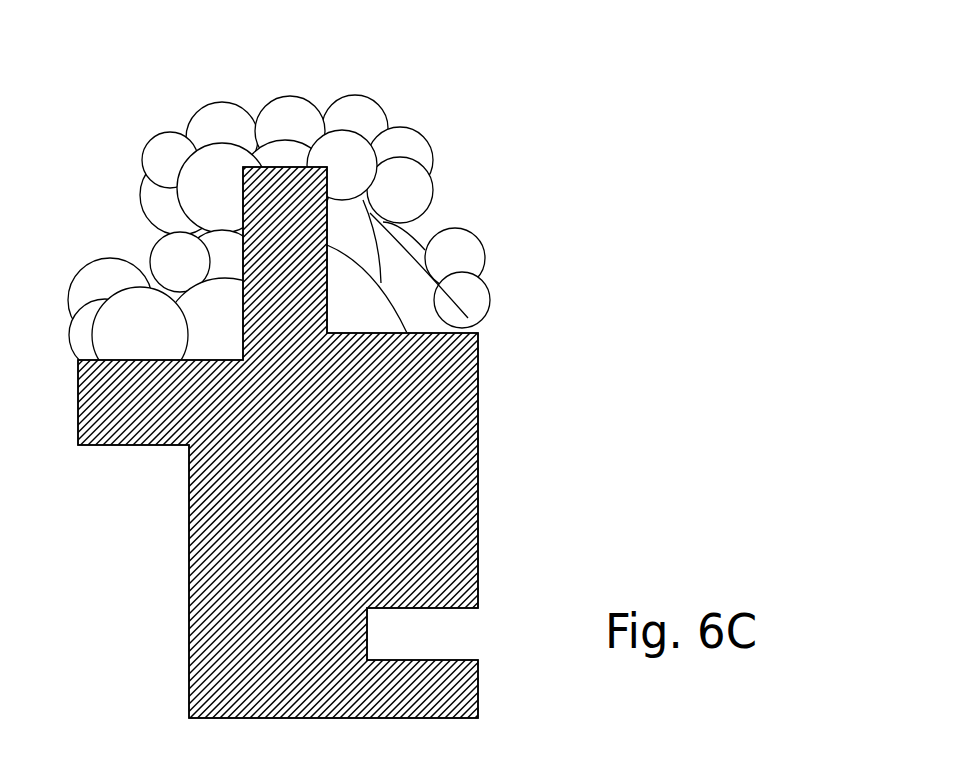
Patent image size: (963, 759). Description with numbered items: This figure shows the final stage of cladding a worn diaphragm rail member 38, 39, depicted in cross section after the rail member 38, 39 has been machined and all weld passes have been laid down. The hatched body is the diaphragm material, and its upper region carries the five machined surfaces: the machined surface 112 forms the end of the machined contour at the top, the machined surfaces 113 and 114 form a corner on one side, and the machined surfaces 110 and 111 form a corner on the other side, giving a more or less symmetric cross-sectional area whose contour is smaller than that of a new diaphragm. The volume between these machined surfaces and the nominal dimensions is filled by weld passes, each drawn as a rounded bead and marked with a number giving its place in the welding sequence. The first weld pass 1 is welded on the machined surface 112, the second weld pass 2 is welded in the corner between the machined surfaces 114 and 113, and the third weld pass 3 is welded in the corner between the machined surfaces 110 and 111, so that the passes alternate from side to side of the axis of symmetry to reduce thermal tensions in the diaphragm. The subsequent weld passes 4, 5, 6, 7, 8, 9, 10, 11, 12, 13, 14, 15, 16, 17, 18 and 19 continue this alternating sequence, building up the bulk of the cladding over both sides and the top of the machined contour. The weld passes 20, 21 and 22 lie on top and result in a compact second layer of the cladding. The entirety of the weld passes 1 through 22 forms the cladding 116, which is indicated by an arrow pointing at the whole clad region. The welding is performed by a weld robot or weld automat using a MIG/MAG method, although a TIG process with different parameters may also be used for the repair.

The first weld pass 1 is at (285, 185).
The second weld pass 2 is at (225, 340).
The third weld pass 3 is at (367, 289).
The weld pass 4 is at (222, 270).
The weld pass 5 is at (364, 241).
The weld pass 6 is at (140, 335).
The weld pass 7 is at (419, 265).
The weld pass 8 is at (222, 188).
The weld pass 9 is at (342, 165).
The weld pass 10 is at (105, 335).
The weld pass 11 is at (462, 300).
The weld pass 12 is at (180, 262).
The weld pass 13 is at (404, 236).
The weld pass 14 is at (180, 195).
The weld pass 15 is at (400, 190).
The weld pass 16 is at (110, 300).
The weld pass 17 is at (455, 258).
The weld pass 18 is at (170, 160).
The weld pass 19 is at (400, 160).
The weld pass 20 is at (290, 131).
The weld pass 21 is at (222, 138).
The weld pass 22 is at (355, 128).
The rail member 38 is at (478, 467).
The rail member 39 is at (278, 442).
The machined surface 110 is at (437, 333).
The machined surface 111 is at (327, 217).
The machined surface 112 is at (302, 167).
The machined surface 113 is at (162, 228).
The machined surface 114 is at (148, 272).
The cladding 116 is at (690, 143).